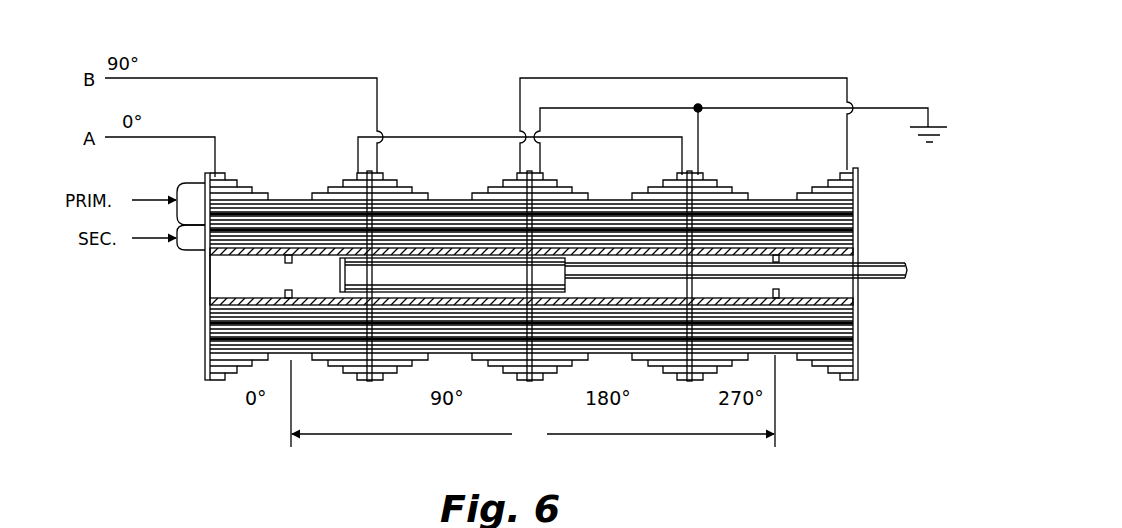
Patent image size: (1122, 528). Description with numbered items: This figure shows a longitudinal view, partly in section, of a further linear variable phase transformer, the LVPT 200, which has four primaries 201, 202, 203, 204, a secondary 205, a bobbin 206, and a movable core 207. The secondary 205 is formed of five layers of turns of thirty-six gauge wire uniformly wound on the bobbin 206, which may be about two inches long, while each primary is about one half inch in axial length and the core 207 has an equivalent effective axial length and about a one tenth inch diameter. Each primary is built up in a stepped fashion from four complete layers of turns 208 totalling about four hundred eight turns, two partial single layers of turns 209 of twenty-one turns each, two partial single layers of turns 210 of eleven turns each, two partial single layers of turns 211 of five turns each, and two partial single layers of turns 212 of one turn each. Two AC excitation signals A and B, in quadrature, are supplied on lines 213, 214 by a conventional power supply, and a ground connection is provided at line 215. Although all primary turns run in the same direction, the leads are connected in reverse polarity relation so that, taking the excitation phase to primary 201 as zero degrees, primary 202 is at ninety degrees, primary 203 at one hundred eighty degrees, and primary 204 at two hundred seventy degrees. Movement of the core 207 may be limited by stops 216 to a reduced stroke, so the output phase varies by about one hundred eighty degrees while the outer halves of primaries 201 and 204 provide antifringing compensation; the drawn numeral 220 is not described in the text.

The LVPT 200 is at (396, 66).
The primary 201 is at (335, 141).
The primary 202 is at (459, 130).
The primary 203 is at (628, 70).
The primary 204 is at (780, 72).
The secondary 205 is at (198, 236).
The bobbin 206 is at (216, 262).
The movable core 207 is at (340, 267).
The complete layers of turns 208 is at (197, 189).
The partial single layers of turns 209 is at (264, 198).
The partial single layers of turns 210 is at (264, 191).
The partial single layers of turns 211 is at (234, 185).
The partial single layers of turns 212 is at (218, 176).
The line 213 is at (162, 137).
The line 214 is at (208, 79).
The line 215 is at (893, 105).
The stops 216 is at (284, 292).
The length dimension 220 is at (518, 441).